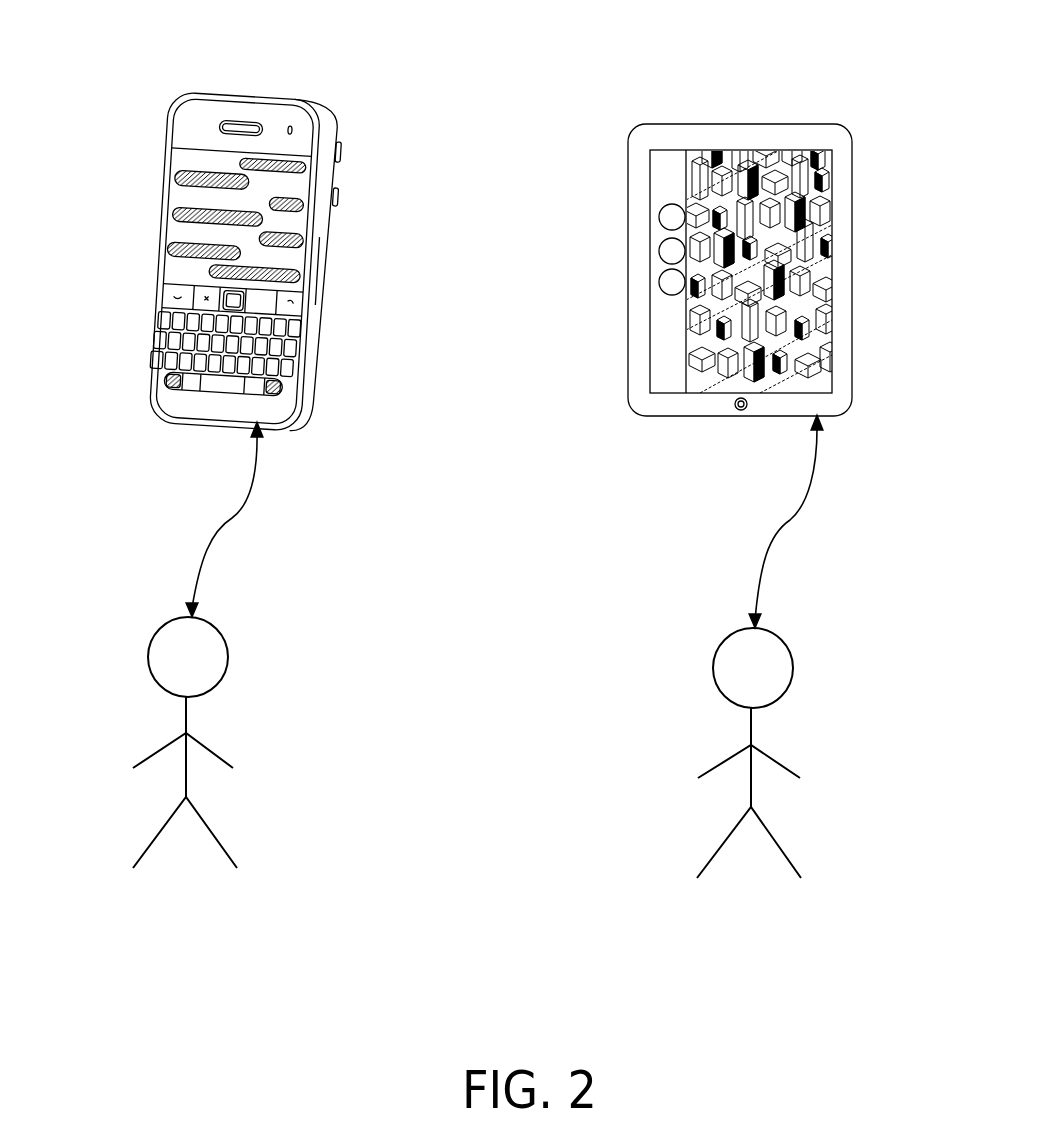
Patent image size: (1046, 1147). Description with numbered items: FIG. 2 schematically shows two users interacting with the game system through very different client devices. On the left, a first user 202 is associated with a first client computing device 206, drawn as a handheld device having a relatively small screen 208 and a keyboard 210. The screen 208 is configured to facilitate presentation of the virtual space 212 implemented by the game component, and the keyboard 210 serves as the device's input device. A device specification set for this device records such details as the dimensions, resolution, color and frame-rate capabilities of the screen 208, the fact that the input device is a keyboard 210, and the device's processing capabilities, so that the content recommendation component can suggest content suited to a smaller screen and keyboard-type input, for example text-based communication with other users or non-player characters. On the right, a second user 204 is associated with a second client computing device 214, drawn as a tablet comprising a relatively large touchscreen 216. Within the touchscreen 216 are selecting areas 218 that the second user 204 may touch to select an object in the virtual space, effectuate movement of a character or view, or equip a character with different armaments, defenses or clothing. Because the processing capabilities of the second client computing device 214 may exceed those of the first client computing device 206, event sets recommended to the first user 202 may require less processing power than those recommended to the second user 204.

The first user 202 is at (151, 644).
The second user 204 is at (787, 643).
The first client computing device 206 is at (178, 155).
The screen 208 is at (207, 96).
The keyboard 210 is at (309, 265).
The virtual space 212 is at (237, 220).
The second client computing device 214 is at (853, 212).
The touchscreen 216 is at (692, 153).
The selecting areas 218 is at (657, 282).